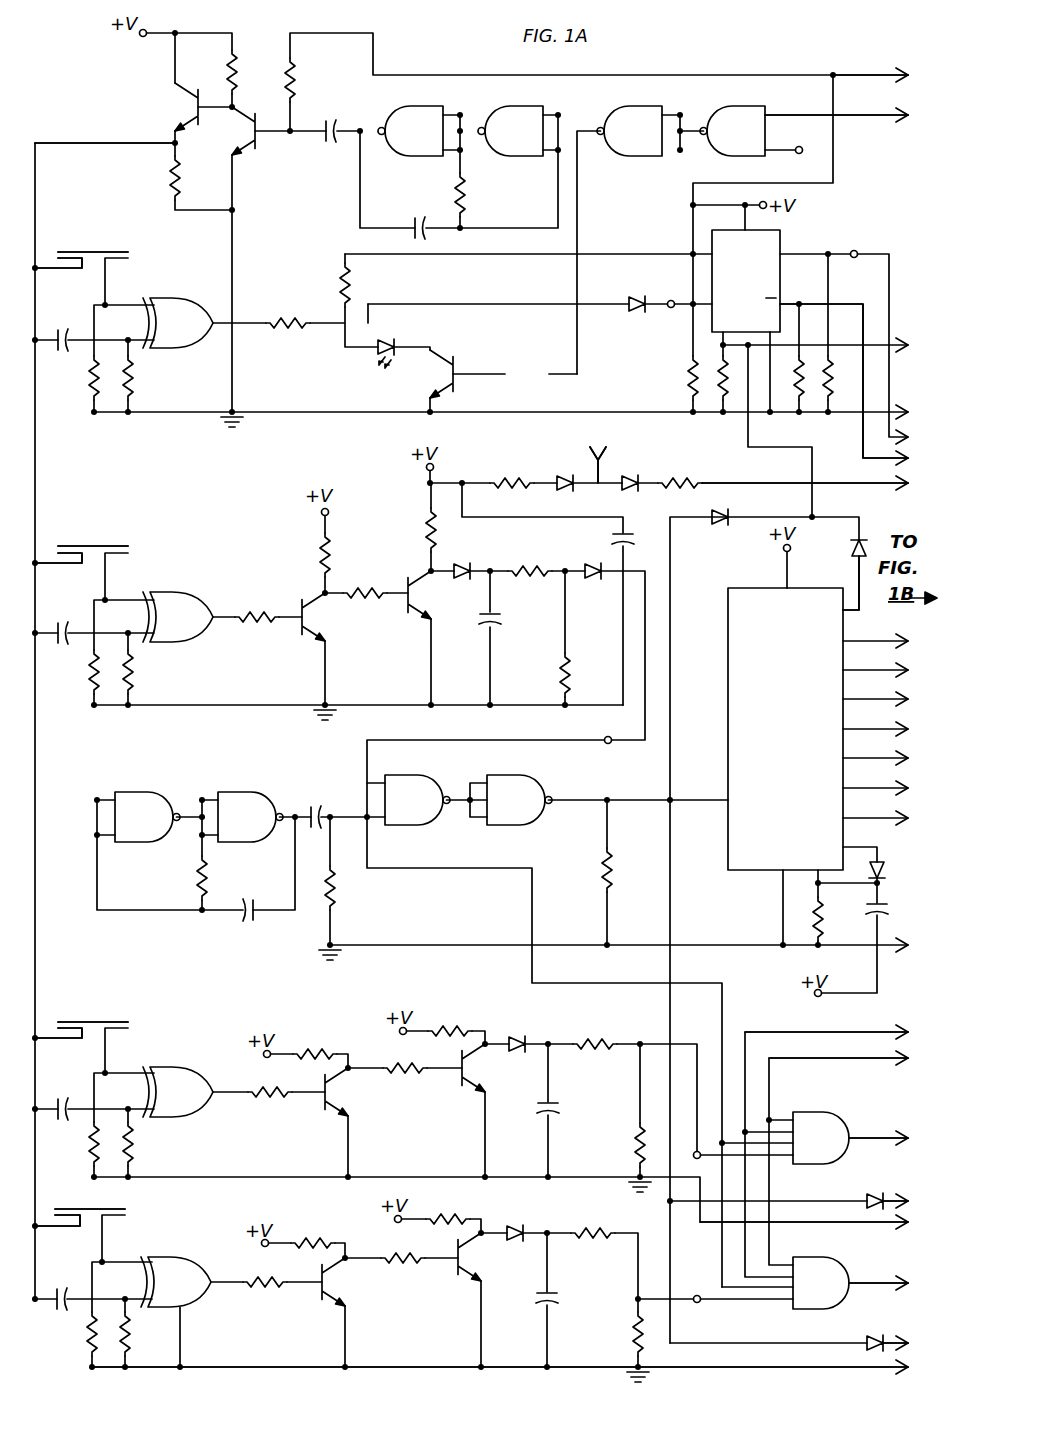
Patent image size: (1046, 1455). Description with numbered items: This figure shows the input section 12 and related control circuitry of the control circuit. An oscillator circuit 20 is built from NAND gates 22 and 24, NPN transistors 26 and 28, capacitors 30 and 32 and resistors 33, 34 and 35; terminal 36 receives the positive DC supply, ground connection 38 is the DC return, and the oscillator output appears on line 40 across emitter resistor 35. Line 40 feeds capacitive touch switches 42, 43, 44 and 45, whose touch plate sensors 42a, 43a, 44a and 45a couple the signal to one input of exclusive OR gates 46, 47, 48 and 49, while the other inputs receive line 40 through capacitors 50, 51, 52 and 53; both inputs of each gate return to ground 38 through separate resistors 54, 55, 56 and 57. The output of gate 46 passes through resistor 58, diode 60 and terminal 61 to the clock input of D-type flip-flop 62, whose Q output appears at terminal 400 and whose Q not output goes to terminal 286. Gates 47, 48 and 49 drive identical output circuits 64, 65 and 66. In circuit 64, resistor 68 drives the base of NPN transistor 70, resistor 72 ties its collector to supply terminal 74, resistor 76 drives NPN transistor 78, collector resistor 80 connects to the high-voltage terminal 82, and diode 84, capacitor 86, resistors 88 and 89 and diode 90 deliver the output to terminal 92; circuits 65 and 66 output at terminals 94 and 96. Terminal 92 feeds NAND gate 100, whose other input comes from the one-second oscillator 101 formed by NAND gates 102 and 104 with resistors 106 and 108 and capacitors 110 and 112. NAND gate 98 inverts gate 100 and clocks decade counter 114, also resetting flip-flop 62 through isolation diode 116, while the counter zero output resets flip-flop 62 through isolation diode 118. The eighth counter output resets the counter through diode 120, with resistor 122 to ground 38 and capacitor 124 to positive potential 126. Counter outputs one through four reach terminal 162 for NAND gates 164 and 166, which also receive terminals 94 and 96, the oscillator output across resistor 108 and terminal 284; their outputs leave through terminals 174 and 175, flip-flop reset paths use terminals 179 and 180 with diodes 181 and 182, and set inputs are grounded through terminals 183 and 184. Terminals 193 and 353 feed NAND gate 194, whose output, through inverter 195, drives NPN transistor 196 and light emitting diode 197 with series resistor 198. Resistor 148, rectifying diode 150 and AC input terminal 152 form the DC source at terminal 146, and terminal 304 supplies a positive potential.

The terminal 36 is at (142, 37).
The resistor 33 is at (236, 76).
The NPN transistor 28 is at (190, 110).
The line 40 is at (54, 143).
The emitter resistor 35 is at (170, 178).
The NPN transistor 26 is at (260, 140).
The resistor 34 is at (294, 80).
The capacitor 30 is at (322, 140).
The NAND gate 24 is at (410, 115).
The NAND gate 22 is at (518, 115).
The oscillator circuit 20 is at (403, 186).
The capacitor 32 is at (413, 232).
The inverter 195 is at (645, 115).
The NAND gate 194 is at (732, 115).
The terminal 304 is at (920, 62).
The terminal 193 is at (912, 121).
The terminal 353 is at (802, 156).
The D-type flip-flop 62 is at (746, 282).
The terminal 400 is at (851, 252).
The diode 60 is at (638, 297).
The terminal 61 is at (670, 300).
The touch plate sensor 42a is at (100, 250).
The capacitive touch switch 42 is at (87, 262).
The exclusive OR gate 46 is at (190, 305).
The capacitor 50 is at (58, 350).
The resistors 54 is at (124, 385).
The resistor 58 is at (292, 332).
The resistor 198 is at (349, 280).
The light emitting diode 197 is at (390, 340).
The NPN transistor 196 is at (455, 385).
The ground connection 38 is at (238, 418).
The terminal 286 is at (903, 460).
The terminal 146 is at (903, 485).
The input terminal 152 is at (598, 452).
The rectifying diode 150 is at (628, 474).
The resistor 148 is at (690, 480).
The terminal 82 is at (434, 467).
The input section 12 is at (114, 495).
The touch plate sensor 43a is at (100, 544).
The capacitive touch switch 43 is at (88, 558).
The exclusive OR gate 47 is at (190, 600).
The capacitor 51 is at (58, 643).
The resistors 55 is at (124, 684).
The resistor 68 is at (262, 628).
The NPN transistor 70 is at (310, 612).
The resistor 72 is at (328, 552).
The terminal 74 is at (329, 512).
The resistor 76 is at (362, 600).
The NPN transistor 78 is at (420, 598).
The collector resistor 80 is at (428, 528).
The diode 84 is at (460, 562).
The capacitor 86 is at (495, 620).
The resistor 88 is at (514, 562).
The diode 90 is at (600, 551).
The resistor 89 is at (569, 672).
The output circuit 64 is at (514, 651).
The terminal 92 is at (610, 728).
The isolation diode 116 is at (724, 526).
The isolation diode 118 is at (855, 548).
The decade counter 114 is at (752, 690).
The oscillator 101 is at (187, 771).
The NAND gate 102 is at (145, 835).
The NAND gate 104 is at (240, 835).
The resistor 106 is at (198, 882).
The resistor 108 is at (334, 884).
The capacitor 110 is at (258, 915).
The capacitor 112 is at (328, 788).
The NAND gate 100 is at (412, 818).
The NAND gate 98 is at (507, 818).
The diode 120 is at (884, 872).
The resistor 122 is at (822, 920).
The capacitor 124 is at (882, 914).
The positive voltage potential 126 is at (816, 997).
The terminal 162 is at (904, 1028).
The terminal 284 is at (906, 1064).
The NAND gate 164 is at (805, 1118).
The terminal 174 is at (912, 1122).
The diode 181 is at (868, 1198).
The terminal 179 is at (926, 1170).
The terminal 183 is at (916, 1230).
The NAND gate 166 is at (805, 1263).
The terminal 175 is at (912, 1264).
The diode 182 is at (870, 1340).
The terminal 180 is at (926, 1313).
The terminal 184 is at (912, 1372).
The touch plate sensor 44a is at (100, 1020).
The capacitive touch switch 44 is at (88, 1033).
The exclusive OR gate 48 is at (190, 1075).
The capacitor 52 is at (58, 1119).
The resistors 56 is at (124, 1156).
The output circuit 65 is at (569, 1105).
The terminal 94 is at (689, 1153).
The touch plate sensor 45a is at (97, 1207).
The capacitive touch switch 45 is at (86, 1220).
The exclusive OR gate 49 is at (186, 1265).
The capacitor 53 is at (57, 1309).
The resistors 57 is at (122, 1346).
The output circuit 66 is at (567, 1298).
The terminal 96 is at (691, 1289).